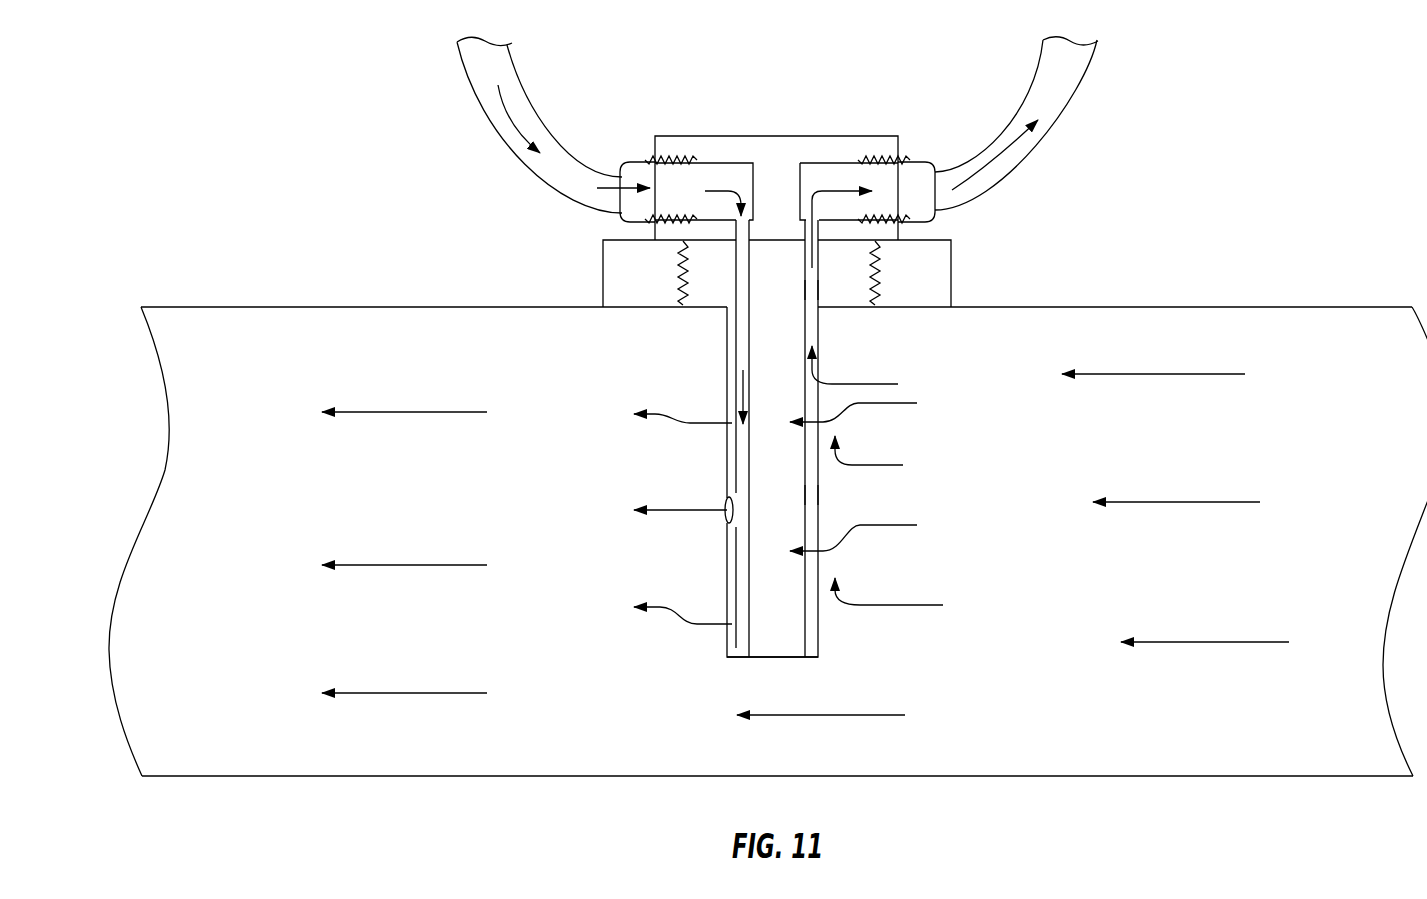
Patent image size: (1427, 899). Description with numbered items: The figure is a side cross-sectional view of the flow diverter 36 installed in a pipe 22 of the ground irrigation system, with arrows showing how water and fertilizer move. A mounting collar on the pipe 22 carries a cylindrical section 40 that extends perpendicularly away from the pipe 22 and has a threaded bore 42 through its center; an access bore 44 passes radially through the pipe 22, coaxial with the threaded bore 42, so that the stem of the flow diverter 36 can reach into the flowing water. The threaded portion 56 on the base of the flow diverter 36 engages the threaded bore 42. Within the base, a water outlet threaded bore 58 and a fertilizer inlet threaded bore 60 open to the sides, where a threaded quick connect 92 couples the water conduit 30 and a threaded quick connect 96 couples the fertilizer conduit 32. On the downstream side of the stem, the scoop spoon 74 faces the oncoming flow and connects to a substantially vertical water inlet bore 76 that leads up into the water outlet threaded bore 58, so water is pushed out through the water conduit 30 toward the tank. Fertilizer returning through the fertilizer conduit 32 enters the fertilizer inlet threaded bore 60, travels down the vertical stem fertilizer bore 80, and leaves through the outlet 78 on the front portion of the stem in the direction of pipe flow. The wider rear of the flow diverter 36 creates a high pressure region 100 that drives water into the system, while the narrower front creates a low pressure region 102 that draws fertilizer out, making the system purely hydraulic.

The pipe 22 is at (1094, 779).
The water conduit 30 is at (1055, 93).
The fertilizer conduit 32 is at (573, 182).
The flow diverter 36 is at (777, 158).
The cylindrical section 40 is at (828, 261).
The threaded bore 42 is at (880, 290).
The access bore 44 is at (796, 462).
The threaded portion 56 is at (880, 290).
The water outlet threaded bore 58 is at (863, 173).
The fertilizer inlet threaded bore 60 is at (727, 177).
The scoop spoon 74 is at (812, 495).
The water inlet bore 76 is at (812, 290).
The outlet 78 is at (725, 503).
The vertical stem fertilizer bore 80 is at (742, 647).
The threaded quick connect 92 is at (920, 180).
The threaded quick connect 96 is at (635, 176).
The high pressure region 100 is at (879, 506).
The low pressure region 102 is at (651, 542).